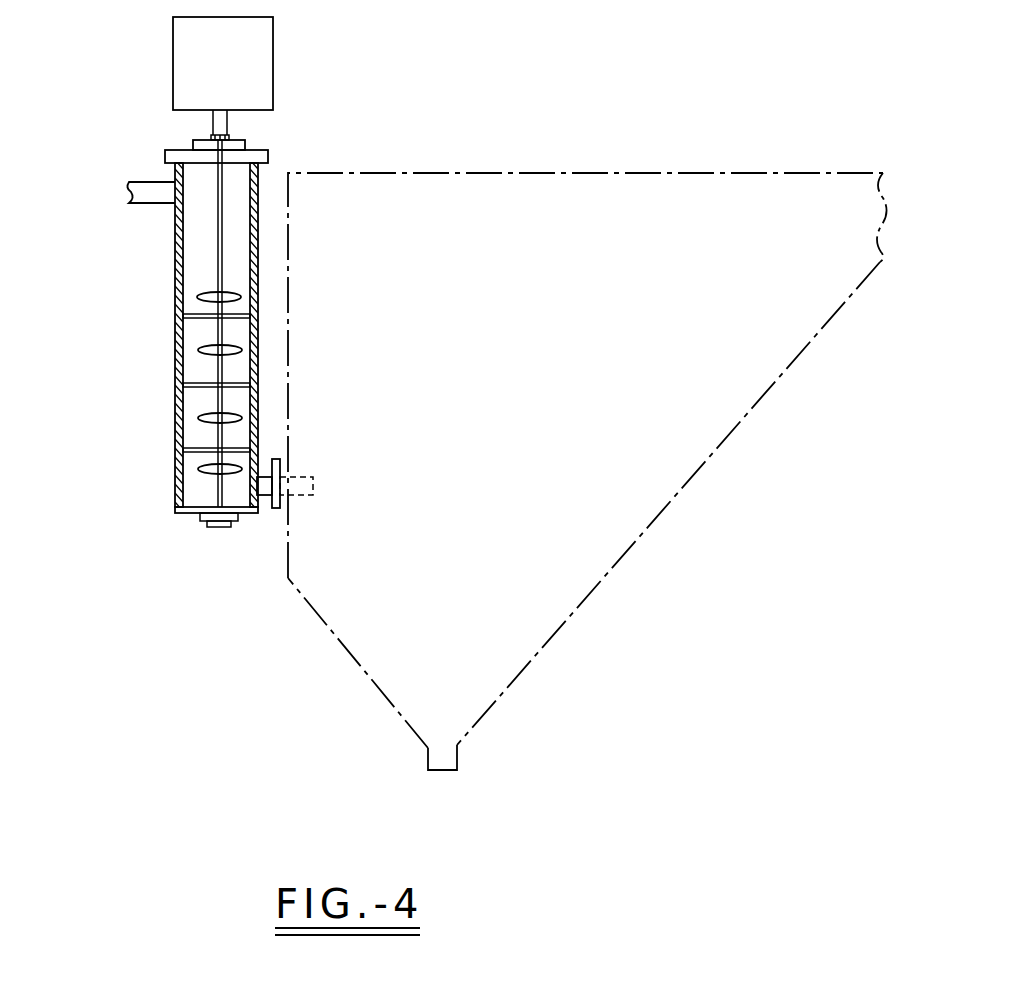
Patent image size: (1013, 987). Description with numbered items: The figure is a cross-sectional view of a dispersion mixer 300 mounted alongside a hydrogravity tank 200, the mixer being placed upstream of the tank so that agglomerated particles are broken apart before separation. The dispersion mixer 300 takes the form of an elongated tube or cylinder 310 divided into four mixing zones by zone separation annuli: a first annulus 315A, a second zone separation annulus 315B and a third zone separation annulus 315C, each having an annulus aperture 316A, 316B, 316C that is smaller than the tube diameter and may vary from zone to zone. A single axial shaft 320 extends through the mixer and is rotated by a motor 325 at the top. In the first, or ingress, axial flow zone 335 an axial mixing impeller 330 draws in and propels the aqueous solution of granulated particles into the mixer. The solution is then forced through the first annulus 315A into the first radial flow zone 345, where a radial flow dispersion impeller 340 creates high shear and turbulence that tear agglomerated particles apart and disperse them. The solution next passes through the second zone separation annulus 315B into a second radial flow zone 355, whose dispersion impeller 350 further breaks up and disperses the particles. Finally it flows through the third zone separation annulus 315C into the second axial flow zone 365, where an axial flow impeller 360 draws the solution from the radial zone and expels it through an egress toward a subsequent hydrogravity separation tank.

The tank 200 is at (586, 156).
The dispersion mixer 300 is at (170, 540).
The elongated tube or cylinder 310 is at (173, 500).
The first annulus 315A is at (250, 313).
The second zone separation annulus 315B is at (250, 384).
The third zone separation annulus 315C is at (252, 449).
The annulus aperture 316A is at (242, 319).
The annulus aperture 316B is at (240, 388).
The annulus aperture 316C is at (205, 448).
The axial shaft 320 is at (218, 238).
The motor 325 is at (274, 50).
The axial mixing impeller 330 is at (197, 297).
The axial flow zone 335 is at (200, 263).
The radial flow dispersion impeller 340 is at (198, 351).
The first radial flow zone 345 is at (200, 337).
The dispersion impeller 350 is at (197, 418).
The second radial flow zone 355 is at (200, 402).
The axial flow impeller 360 is at (198, 470).
The second axial flow zone 365 is at (248, 505).